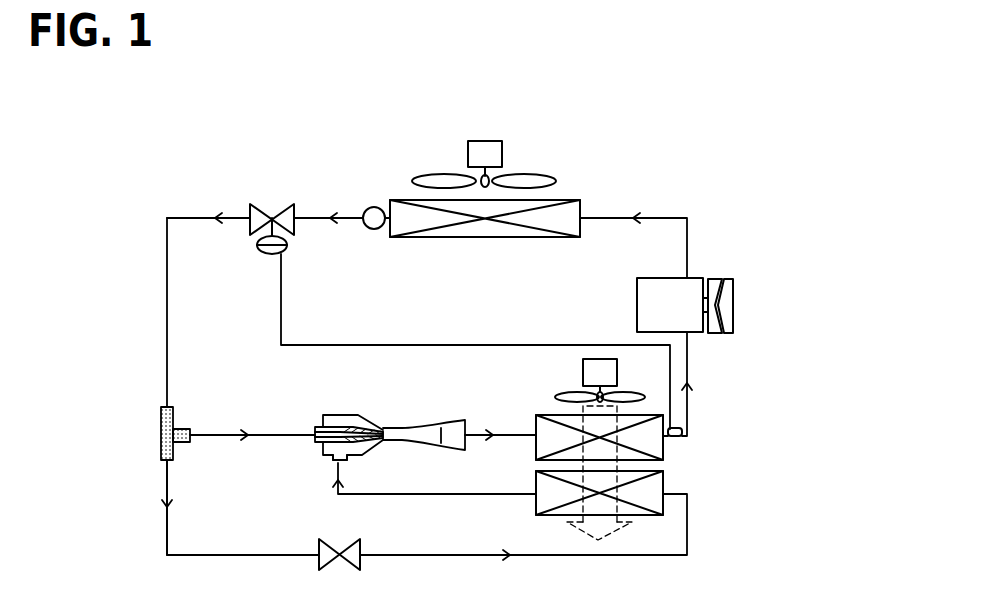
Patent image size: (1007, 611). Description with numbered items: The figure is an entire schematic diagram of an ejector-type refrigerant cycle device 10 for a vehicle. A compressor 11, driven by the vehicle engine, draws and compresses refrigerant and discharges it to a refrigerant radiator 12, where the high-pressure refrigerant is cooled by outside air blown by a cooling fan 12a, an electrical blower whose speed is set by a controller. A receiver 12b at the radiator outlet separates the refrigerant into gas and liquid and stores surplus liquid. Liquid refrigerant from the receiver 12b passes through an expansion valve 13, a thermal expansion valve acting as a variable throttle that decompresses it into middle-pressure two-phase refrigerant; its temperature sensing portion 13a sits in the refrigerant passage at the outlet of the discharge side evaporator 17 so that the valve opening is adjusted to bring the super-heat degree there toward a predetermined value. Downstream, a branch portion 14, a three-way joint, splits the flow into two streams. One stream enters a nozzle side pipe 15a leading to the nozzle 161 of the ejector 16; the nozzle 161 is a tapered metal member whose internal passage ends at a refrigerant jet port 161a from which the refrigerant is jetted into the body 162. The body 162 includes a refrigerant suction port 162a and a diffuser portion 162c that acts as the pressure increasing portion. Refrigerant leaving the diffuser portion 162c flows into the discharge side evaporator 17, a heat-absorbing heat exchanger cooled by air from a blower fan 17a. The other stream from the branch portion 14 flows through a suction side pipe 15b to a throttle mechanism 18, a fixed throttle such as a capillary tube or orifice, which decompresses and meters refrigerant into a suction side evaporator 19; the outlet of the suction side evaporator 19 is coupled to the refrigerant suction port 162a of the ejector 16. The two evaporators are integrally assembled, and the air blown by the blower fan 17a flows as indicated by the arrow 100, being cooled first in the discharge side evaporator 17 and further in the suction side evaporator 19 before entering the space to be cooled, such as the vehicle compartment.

The ejector-type refrigerant cycle device 10 is at (681, 171).
The compressor 11 is at (703, 278).
The refrigerant radiator 12 is at (582, 200).
The cooling fan 12a is at (468, 153).
The receiver 12b is at (364, 212).
The expansion valve 13 is at (283, 207).
The temperature sensing portion 13a is at (681, 440).
The branch portion 14 is at (161, 410).
The nozzle side pipe 15a is at (215, 434).
The suction side pipe 15b is at (168, 526).
The ejector 16 is at (369, 435).
The nozzle 161 is at (355, 426).
The refrigerant jet port 161a is at (382, 443).
The body 162 is at (400, 427).
The refrigerant suction port 162a is at (333, 458).
The diffuser portion 162c is at (441, 442).
The discharge side evaporator 17 is at (536, 418).
The blower fan 17a is at (583, 372).
The throttle mechanism 18 is at (350, 543).
The suction side evaporator 19 is at (536, 490).
The arrow 100 is at (581, 533).